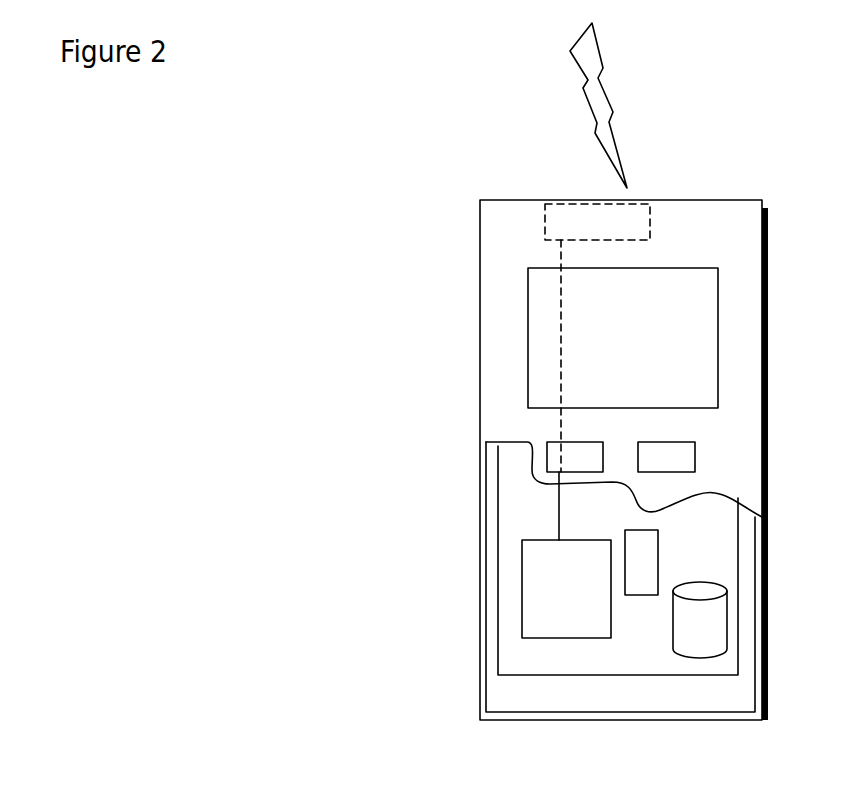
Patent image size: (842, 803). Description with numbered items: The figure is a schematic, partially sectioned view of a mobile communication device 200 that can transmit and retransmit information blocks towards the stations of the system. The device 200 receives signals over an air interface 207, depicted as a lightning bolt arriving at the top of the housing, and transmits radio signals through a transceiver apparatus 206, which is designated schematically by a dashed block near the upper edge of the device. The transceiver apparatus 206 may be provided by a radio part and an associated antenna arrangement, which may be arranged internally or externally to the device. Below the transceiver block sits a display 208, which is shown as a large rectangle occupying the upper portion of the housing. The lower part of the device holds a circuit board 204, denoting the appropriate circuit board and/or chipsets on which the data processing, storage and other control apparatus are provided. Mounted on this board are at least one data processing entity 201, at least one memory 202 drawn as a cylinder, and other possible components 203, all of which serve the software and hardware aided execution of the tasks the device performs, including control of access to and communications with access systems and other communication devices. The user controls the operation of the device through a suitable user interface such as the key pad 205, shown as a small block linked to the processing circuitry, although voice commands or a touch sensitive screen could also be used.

The communication device 200 is at (480, 243).
The data processing entity 201 is at (528, 573).
The memory 202 is at (693, 630).
The other possible components 203 is at (640, 545).
The circuit board 204 is at (522, 658).
The key pad 205 is at (552, 457).
The transceiver apparatus 206 is at (640, 215).
The air interface 207 is at (627, 131).
The display 208 is at (545, 325).